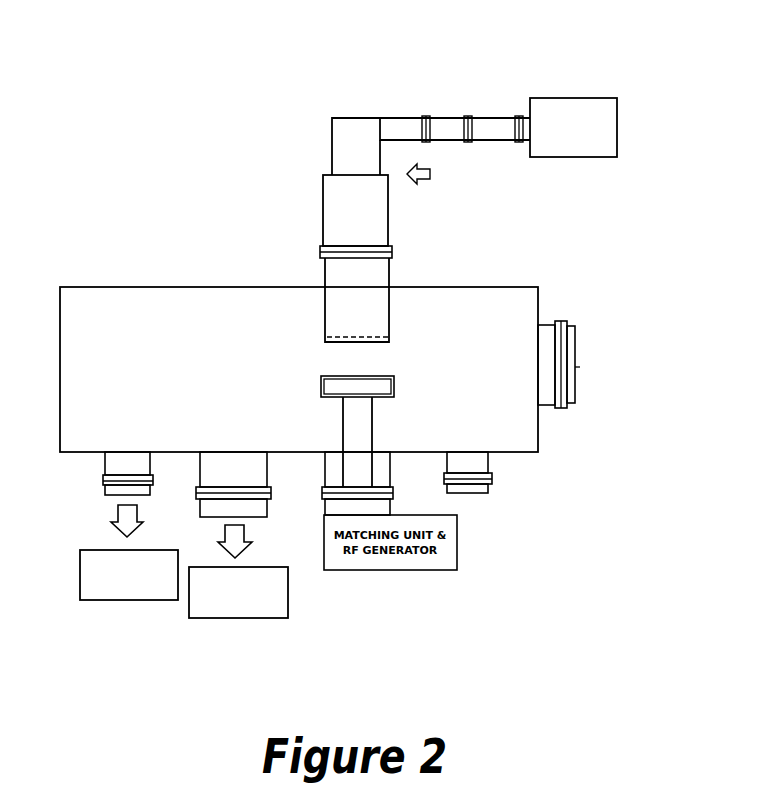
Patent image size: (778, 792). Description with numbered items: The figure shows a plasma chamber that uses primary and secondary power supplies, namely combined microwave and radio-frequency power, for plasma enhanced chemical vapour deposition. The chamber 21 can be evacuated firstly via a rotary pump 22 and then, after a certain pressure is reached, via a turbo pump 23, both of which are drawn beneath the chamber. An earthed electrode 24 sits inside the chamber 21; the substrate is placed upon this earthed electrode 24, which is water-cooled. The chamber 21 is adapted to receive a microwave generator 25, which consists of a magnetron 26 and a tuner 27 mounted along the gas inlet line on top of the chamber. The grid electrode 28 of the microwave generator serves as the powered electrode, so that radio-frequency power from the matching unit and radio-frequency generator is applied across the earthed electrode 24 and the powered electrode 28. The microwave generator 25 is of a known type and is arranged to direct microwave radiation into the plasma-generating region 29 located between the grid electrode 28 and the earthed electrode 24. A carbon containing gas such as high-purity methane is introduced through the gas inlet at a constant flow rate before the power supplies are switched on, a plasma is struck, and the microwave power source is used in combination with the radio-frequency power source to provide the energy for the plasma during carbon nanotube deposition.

The chamber 21 is at (344, 389).
The rotary pump 22 is at (104, 599).
The turbo pump 23 is at (265, 608).
The earthed electrode 24 is at (457, 432).
The microwave generator 25 is at (480, 116).
The magnetron 26 is at (605, 127).
The tuner 27 is at (497, 160).
The grid electrode 28 is at (388, 258).
The plasma-generating region 29 is at (392, 349).